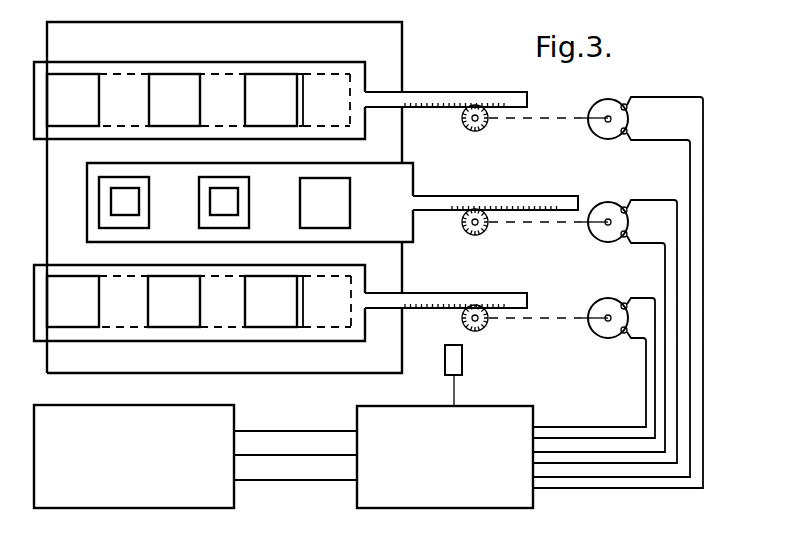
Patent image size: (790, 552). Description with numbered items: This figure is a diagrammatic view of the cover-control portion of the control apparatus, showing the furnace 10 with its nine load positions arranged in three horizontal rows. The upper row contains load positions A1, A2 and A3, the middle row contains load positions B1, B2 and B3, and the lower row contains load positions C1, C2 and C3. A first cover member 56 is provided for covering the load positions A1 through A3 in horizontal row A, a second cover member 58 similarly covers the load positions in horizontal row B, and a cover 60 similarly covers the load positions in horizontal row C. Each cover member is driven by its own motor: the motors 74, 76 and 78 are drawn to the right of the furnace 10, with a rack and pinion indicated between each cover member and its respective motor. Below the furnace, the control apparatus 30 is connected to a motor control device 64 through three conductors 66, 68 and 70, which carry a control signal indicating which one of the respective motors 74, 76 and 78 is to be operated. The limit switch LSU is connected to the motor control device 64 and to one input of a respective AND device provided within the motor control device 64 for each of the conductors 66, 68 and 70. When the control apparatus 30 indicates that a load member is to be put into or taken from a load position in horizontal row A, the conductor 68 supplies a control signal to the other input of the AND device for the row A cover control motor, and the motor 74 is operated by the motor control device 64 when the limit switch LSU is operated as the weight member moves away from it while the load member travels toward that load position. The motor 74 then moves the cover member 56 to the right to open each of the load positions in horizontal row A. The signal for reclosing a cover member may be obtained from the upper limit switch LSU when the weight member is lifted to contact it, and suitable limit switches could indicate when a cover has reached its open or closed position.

The furnace 10 is at (47, 207).
The control apparatus 30 is at (235, 414).
The first cover member 56 is at (364, 70).
The second cover member 58 is at (414, 170).
The cover 60 is at (365, 270).
The motor control device 64 is at (534, 411).
The conductor 66 is at (321, 416).
The conductor 68 is at (321, 444).
The conductor 70 is at (321, 466).
The motor 74 is at (629, 128).
The motor 76 is at (629, 228).
The motor 78 is at (594, 337).
The load position A1 is at (115, 73).
The load position A2 is at (222, 73).
The load position A3 is at (320, 73).
The load position B1 is at (124, 183).
The load position B2 is at (229, 183).
The load position B3 is at (330, 183).
The load position C1 is at (126, 275).
The load position C2 is at (225, 276).
The load position C3 is at (320, 276).
The limit switch LSU is at (437, 361).